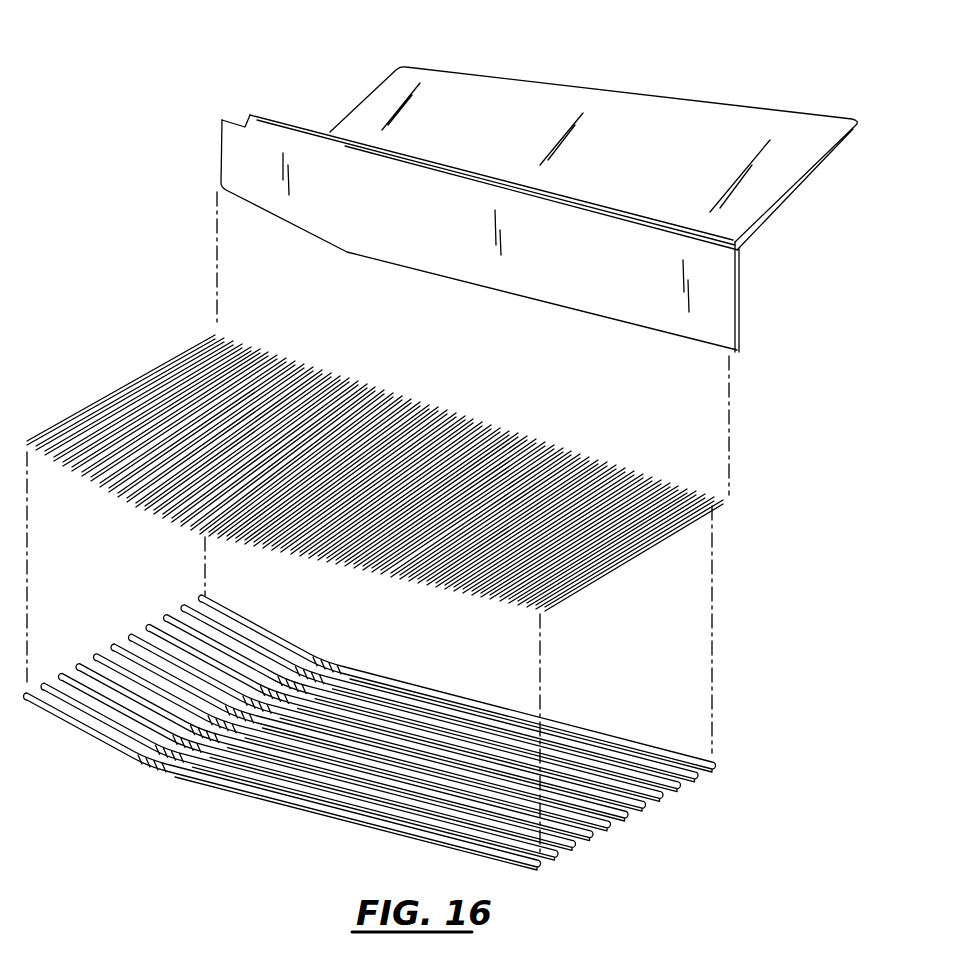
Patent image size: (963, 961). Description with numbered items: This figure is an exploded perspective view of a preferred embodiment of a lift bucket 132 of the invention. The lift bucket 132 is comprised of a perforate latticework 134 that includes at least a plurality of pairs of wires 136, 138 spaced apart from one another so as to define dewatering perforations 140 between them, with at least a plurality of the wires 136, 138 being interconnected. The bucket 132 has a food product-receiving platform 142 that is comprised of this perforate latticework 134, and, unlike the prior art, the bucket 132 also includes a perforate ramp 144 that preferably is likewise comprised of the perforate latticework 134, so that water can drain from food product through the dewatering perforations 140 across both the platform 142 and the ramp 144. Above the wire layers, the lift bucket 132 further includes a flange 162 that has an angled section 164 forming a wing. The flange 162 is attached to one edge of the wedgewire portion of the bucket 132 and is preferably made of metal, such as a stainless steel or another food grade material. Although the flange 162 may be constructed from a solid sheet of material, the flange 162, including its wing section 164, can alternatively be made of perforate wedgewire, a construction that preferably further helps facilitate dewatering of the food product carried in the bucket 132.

The lift bucket 132 is at (376, 743).
The perforate latticework 134 is at (376, 790).
The wire 136 is at (116, 392).
The wire 138 is at (185, 789).
The dewatering perforations 140 is at (413, 461).
The food product-receiving platform 142 is at (684, 470).
The perforate ramp 144 is at (192, 337).
The flange 162 is at (280, 110).
The angled section 164 is at (539, 189).